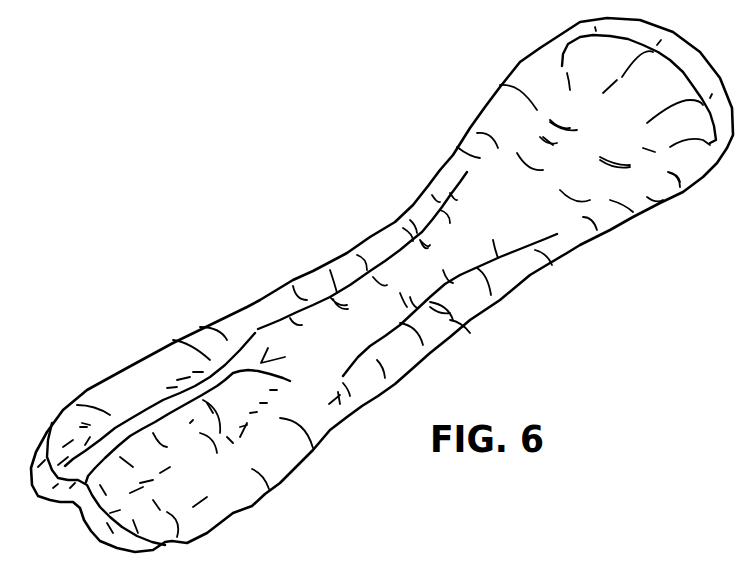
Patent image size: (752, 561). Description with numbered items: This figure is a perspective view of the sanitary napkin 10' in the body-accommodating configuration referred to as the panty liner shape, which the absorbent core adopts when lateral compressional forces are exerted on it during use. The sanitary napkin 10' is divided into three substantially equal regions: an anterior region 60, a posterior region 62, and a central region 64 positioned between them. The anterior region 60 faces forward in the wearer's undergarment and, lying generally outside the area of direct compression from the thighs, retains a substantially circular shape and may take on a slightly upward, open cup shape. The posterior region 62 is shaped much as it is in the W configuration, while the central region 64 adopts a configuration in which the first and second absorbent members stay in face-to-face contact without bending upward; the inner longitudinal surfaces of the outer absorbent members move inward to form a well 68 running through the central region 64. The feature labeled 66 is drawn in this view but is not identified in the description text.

The sanitary napkin 10' is at (382, 285).
The anterior region 60 is at (662, 200).
The posterior region 62 is at (283, 485).
The central region 64 is at (460, 329).
The fold groove 66 is at (162, 400).
The well 68 is at (422, 232).